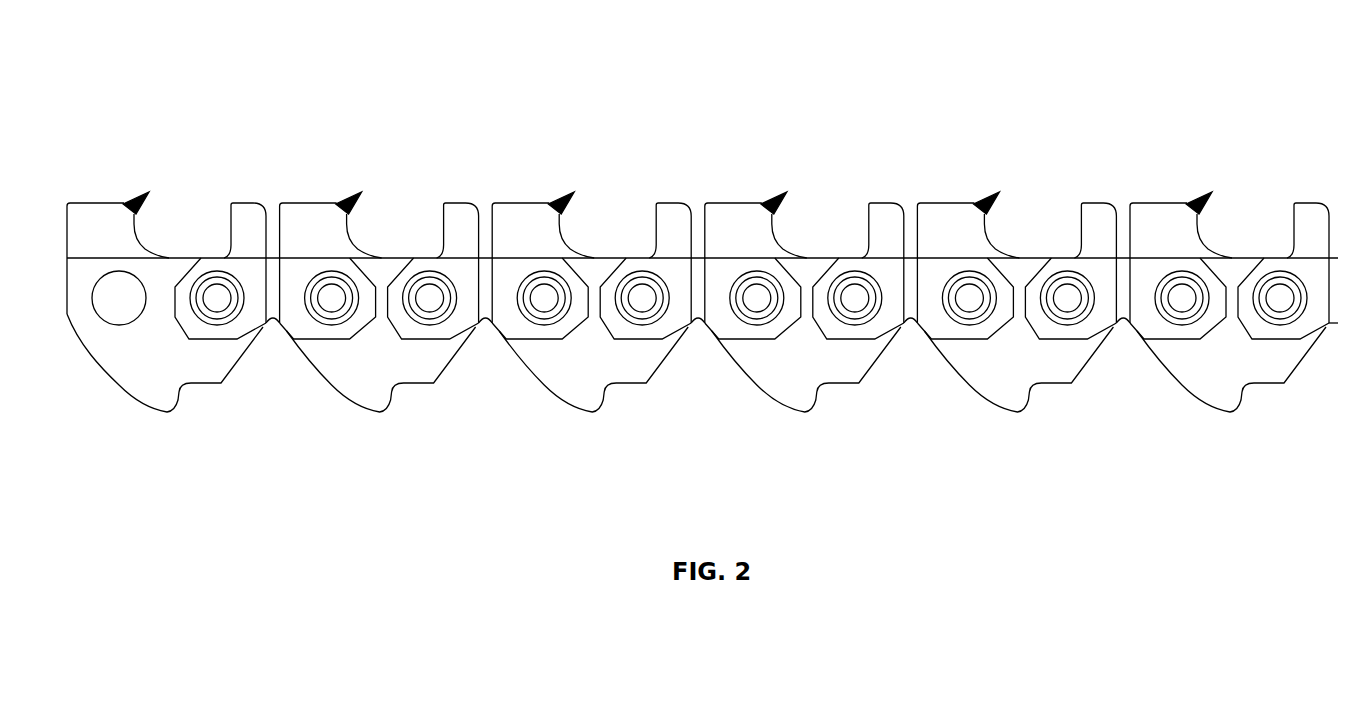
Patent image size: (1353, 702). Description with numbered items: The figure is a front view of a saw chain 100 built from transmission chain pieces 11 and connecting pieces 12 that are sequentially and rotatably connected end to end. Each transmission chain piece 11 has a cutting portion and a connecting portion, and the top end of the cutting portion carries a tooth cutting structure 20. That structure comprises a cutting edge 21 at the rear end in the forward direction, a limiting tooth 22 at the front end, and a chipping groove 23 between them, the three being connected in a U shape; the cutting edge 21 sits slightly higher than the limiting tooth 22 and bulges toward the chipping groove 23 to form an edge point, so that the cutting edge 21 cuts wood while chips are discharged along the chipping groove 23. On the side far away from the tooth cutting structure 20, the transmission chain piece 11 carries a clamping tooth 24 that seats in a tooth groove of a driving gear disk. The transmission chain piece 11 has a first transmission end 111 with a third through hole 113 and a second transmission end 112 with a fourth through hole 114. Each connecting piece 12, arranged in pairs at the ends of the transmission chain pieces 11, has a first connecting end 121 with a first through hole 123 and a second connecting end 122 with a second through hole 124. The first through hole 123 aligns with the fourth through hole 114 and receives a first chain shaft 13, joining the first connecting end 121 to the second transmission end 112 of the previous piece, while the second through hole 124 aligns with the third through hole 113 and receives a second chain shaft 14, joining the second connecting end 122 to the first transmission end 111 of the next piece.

The saw chain 100 is at (131, 79).
The transmission chain piece 11 is at (177, 353).
The connecting piece 12 is at (290, 307).
The first chain shaft 13 is at (210, 303).
The second chain shaft 14 is at (330, 297).
The tooth cutting structure 20 is at (820, 103).
The cutting edge 21 is at (553, 207).
The limiting tooth 22 is at (672, 228).
The chipping groove 23 is at (612, 222).
The clamping tooth 24 is at (580, 380).
The first transmission end 111 is at (937, 238).
The second transmission end 112 is at (1090, 245).
The third through hole 113 is at (983, 280).
The fourth through hole 114 is at (1093, 297).
The first connecting end 121 is at (823, 318).
The second connecting end 122 is at (988, 330).
The first through hole 123 is at (857, 325).
The second through hole 124 is at (995, 310).